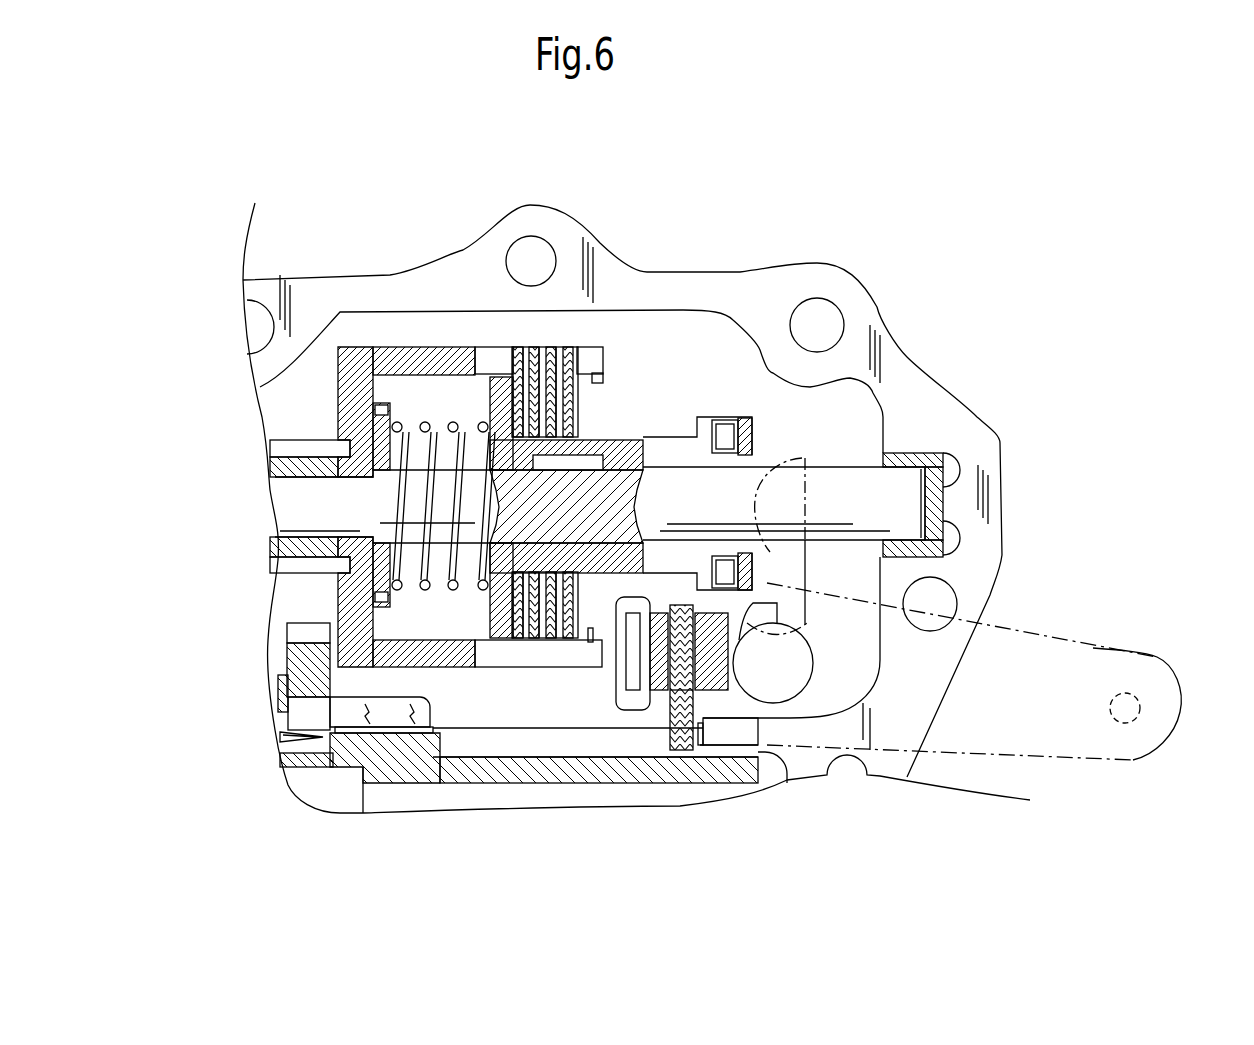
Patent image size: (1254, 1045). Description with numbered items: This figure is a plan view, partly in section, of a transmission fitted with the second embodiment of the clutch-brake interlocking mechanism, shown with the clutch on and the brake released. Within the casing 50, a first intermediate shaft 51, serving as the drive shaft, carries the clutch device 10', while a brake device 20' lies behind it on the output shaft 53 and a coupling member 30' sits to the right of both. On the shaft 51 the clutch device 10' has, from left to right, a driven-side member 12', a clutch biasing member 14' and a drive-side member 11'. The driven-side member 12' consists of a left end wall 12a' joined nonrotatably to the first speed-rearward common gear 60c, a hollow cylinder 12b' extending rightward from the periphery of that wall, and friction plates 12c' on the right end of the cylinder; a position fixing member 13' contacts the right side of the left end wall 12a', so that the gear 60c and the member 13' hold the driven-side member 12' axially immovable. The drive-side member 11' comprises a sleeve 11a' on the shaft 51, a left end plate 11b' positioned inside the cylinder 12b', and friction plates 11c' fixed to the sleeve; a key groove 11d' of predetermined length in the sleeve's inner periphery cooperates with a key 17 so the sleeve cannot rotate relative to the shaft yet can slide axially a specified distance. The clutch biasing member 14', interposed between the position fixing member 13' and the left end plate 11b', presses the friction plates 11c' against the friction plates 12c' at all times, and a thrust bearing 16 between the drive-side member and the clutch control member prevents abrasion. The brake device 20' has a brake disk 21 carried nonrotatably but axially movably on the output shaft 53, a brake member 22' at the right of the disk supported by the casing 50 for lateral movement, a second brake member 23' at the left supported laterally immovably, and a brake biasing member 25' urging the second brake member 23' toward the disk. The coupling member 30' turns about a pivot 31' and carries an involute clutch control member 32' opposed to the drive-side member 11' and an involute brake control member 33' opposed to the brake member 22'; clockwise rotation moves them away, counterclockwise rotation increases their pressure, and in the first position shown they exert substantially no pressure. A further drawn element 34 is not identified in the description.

The casing 50 is at (312, 293).
The first intermediate shaft 51 is at (327, 510).
The first speed-rearward common gear 60c is at (297, 450).
The driven-side member 12' is at (466, 413).
The left end wall 12a' is at (351, 437).
The hollow cylinder 12b' is at (424, 437).
The friction plates 12c' is at (512, 437).
The drive-side member 11' is at (620, 381).
The sleeve 11a' is at (620, 409).
The left end plate 11b' is at (552, 409).
The friction plates 11c' is at (581, 409).
The key groove 11d' is at (613, 409).
The clutch device 10' is at (645, 381).
The position fixing member 13' is at (304, 505).
The clutch biasing member 14' is at (359, 532).
The thrust bearing 16 is at (748, 418).
The key 17 is at (752, 603).
The coupling member 30' is at (831, 470).
The pivot 31' is at (965, 464).
The clutch control member 32' is at (794, 434).
The brake control member 33' is at (909, 490).
The lever arm 34 is at (1070, 667).
The brake device 20' is at (685, 750).
The brake disk 21 is at (680, 713).
The brake member 22' is at (726, 738).
The second brake member 23' is at (661, 738).
The brake biasing member 25' is at (631, 730).
The output shaft 53 is at (388, 795).